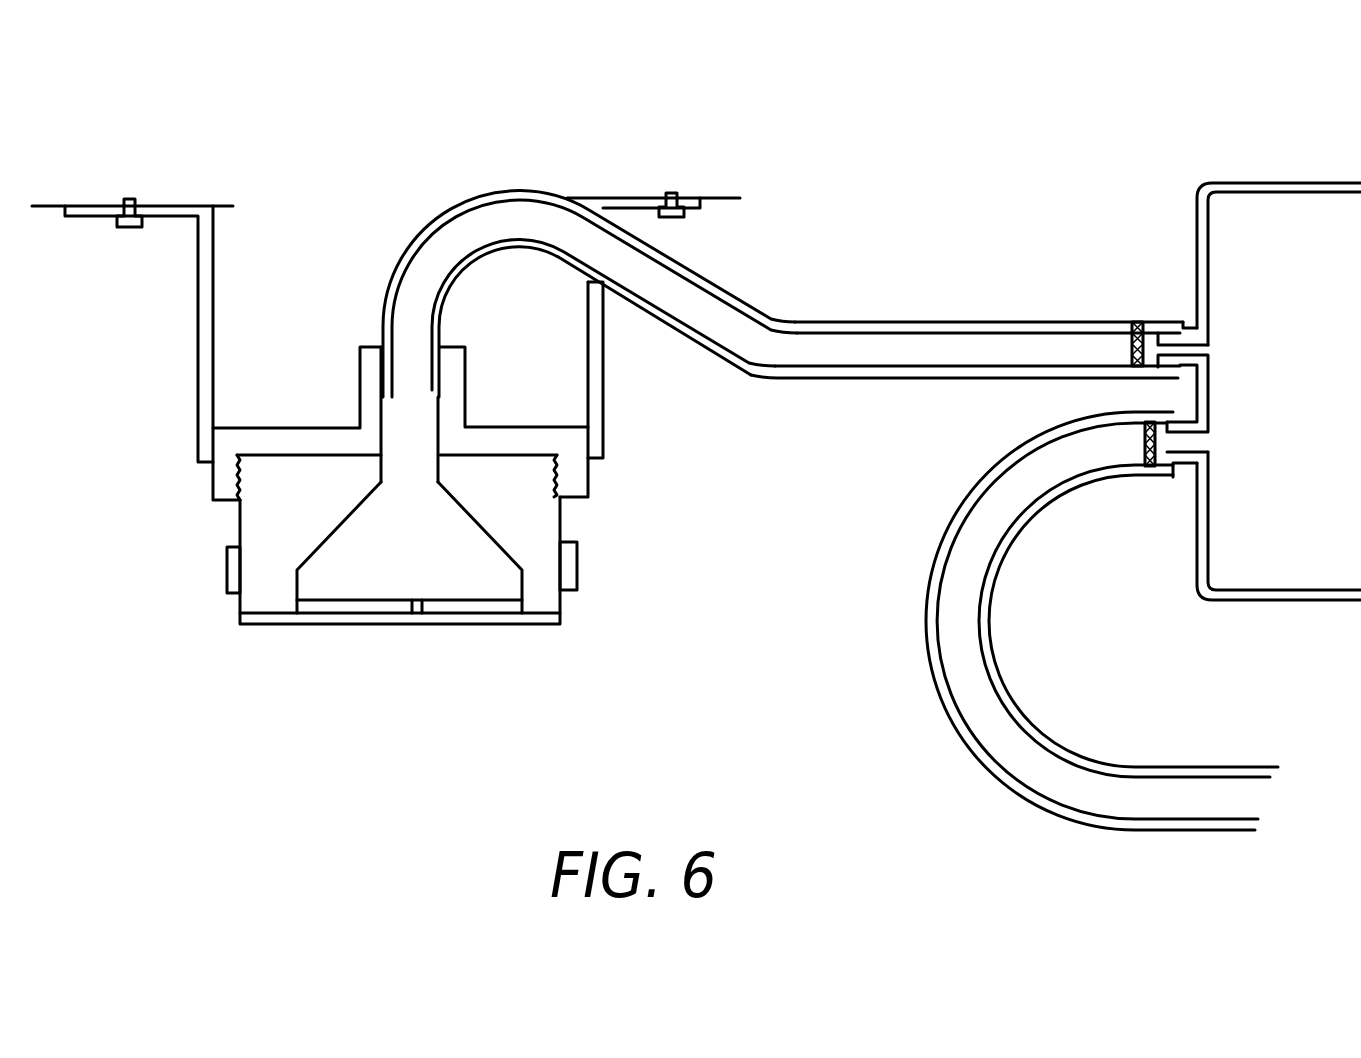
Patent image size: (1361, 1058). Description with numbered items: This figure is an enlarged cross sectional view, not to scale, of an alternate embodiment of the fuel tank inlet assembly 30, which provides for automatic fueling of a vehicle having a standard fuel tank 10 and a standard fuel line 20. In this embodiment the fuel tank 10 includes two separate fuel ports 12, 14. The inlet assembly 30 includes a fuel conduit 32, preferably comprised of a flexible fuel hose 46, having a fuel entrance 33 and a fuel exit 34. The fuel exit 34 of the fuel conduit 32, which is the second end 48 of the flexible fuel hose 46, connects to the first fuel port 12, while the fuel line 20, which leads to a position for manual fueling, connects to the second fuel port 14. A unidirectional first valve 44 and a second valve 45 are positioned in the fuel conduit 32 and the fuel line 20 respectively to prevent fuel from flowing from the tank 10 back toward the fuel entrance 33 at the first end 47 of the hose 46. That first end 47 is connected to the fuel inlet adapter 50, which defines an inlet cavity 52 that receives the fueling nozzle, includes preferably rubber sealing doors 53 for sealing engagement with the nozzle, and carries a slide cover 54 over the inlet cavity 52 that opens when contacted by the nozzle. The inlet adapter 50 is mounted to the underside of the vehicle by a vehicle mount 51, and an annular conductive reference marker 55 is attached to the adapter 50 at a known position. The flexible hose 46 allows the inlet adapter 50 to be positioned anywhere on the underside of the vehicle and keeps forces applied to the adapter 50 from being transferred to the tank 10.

The fuel tank 10 is at (1308, 213).
The first fuel port 12 is at (1200, 347).
The second fuel port 14 is at (1195, 442).
The fuel line 20 is at (1023, 721).
The fuel tank inlet assembly 30 is at (772, 248).
The fuel conduit 32 is at (830, 338).
The fuel entrance 33 is at (428, 573).
The fuel exit 34 is at (1140, 322).
The first valve 44 is at (1167, 320).
The second valve 45 is at (1149, 466).
The flexible fuel hose 46 is at (803, 380).
The first end 47 is at (437, 370).
The second end 48 is at (1181, 322).
The fuel inlet adapter 50 is at (283, 512).
The vehicle mount 51 is at (212, 258).
The inlet cavity 52 is at (397, 528).
The sealing doors 53 is at (495, 612).
The slide cover 54 is at (563, 623).
The conductive reference marker 55 is at (227, 597).